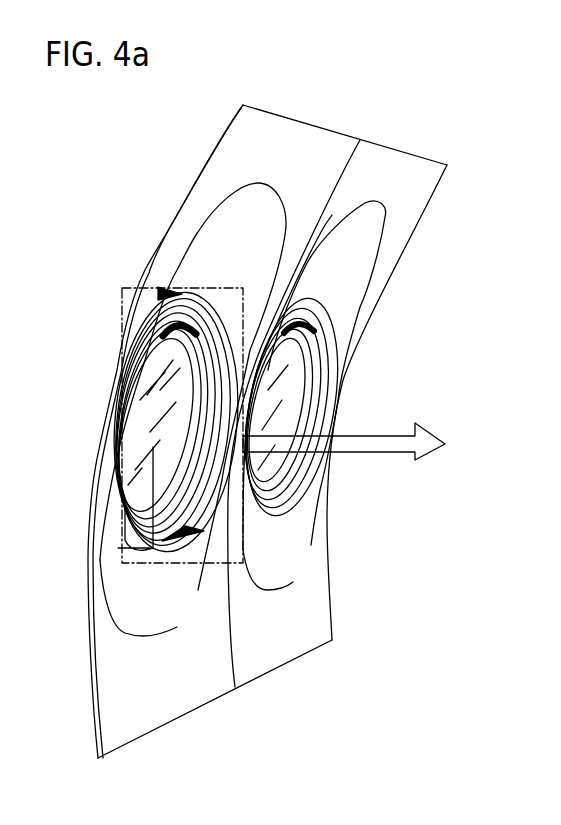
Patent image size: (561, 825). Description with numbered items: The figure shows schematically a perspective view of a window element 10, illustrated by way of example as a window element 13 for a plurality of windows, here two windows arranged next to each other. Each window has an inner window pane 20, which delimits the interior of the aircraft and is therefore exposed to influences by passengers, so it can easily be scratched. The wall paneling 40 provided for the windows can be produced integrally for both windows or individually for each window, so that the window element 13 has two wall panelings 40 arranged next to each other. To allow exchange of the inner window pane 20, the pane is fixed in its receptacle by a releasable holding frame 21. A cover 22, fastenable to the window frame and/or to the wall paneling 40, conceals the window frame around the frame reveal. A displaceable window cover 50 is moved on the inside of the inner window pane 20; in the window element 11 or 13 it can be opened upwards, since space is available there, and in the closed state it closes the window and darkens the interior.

The window element 10 is at (277, 409).
The window element 11 is at (277, 409).
The window element for a plurality of windows 13 is at (277, 409).
The wall paneling 40 is at (267, 122).
The inner window pane 20 is at (239, 379).
The holding frame 21 is at (143, 485).
The cover 22 is at (190, 293).
The displaceable window cover 50 is at (315, 332).